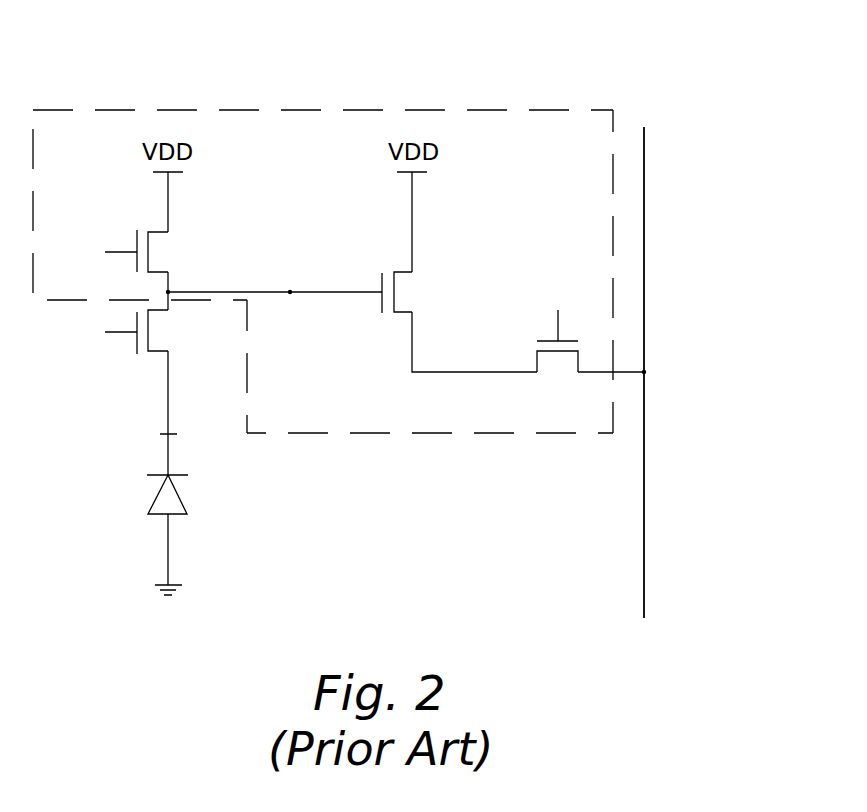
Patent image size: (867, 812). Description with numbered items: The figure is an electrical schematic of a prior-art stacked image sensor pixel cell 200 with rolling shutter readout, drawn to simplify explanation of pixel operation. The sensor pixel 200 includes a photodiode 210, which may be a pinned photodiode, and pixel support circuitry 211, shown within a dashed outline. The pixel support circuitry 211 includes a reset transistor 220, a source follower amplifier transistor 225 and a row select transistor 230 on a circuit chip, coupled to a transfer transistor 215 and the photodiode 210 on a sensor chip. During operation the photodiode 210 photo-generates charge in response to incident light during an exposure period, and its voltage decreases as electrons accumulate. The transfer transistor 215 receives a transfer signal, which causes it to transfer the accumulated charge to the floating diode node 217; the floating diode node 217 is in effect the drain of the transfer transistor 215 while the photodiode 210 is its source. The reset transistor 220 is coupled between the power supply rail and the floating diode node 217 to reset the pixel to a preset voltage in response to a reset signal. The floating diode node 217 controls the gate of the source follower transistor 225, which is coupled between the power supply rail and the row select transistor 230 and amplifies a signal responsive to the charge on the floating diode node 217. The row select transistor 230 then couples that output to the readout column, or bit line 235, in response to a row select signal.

The image sensor pixel cell 200 is at (695, 75).
The pixel support circuitry 211 is at (98, 148).
The photodiode 210 is at (139, 535).
The transfer transistor 215 is at (135, 332).
The floating diode node 217 is at (290, 293).
The reset transistor 220 is at (132, 251).
The source follower amplifier transistor 225 is at (420, 281).
The row select transistor 230 is at (555, 345).
The bit line 235 is at (644, 529).